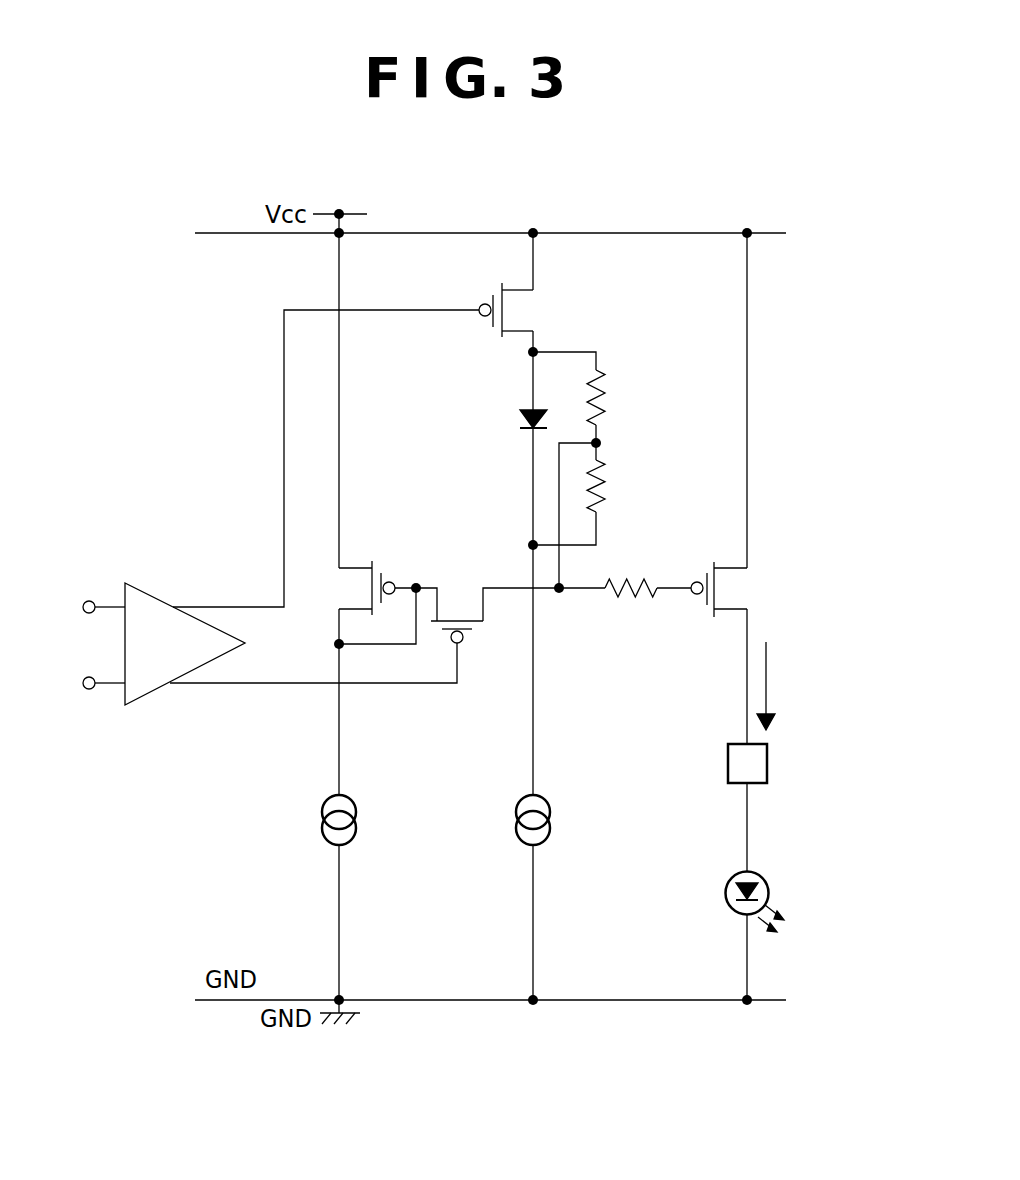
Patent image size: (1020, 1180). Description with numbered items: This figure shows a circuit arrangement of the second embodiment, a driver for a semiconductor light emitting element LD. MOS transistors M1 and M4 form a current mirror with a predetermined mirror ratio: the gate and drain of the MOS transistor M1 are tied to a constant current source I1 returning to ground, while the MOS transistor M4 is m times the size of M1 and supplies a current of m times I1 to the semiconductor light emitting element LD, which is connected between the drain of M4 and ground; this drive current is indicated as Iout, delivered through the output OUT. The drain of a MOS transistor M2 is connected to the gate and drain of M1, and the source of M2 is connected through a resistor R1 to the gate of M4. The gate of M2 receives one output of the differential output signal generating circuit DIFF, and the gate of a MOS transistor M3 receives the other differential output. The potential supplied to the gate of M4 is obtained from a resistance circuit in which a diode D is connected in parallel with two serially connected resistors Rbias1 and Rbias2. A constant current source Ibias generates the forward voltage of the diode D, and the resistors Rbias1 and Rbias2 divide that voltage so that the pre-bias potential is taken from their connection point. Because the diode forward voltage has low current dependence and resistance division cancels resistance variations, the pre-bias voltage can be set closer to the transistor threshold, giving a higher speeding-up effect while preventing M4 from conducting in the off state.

The differential output signal generating circuit DIFF is at (158, 646).
The MOS transistor M1 is at (351, 588).
The MOS transistor M2 is at (457, 597).
The MOS transistor M3 is at (526, 310).
The MOS transistor M4 is at (732, 589).
The diode D is at (521, 417).
The resistor Rbias1 is at (637, 397).
The resistor Rbias2 is at (637, 486).
The resistor R1 is at (648, 607).
The constant current source I1 is at (324, 820).
The constant current source Ibias is at (500, 820).
The output current Iout is at (788, 686).
The output terminal OUT is at (776, 763).
The semiconductor light emitting element LD is at (764, 891).